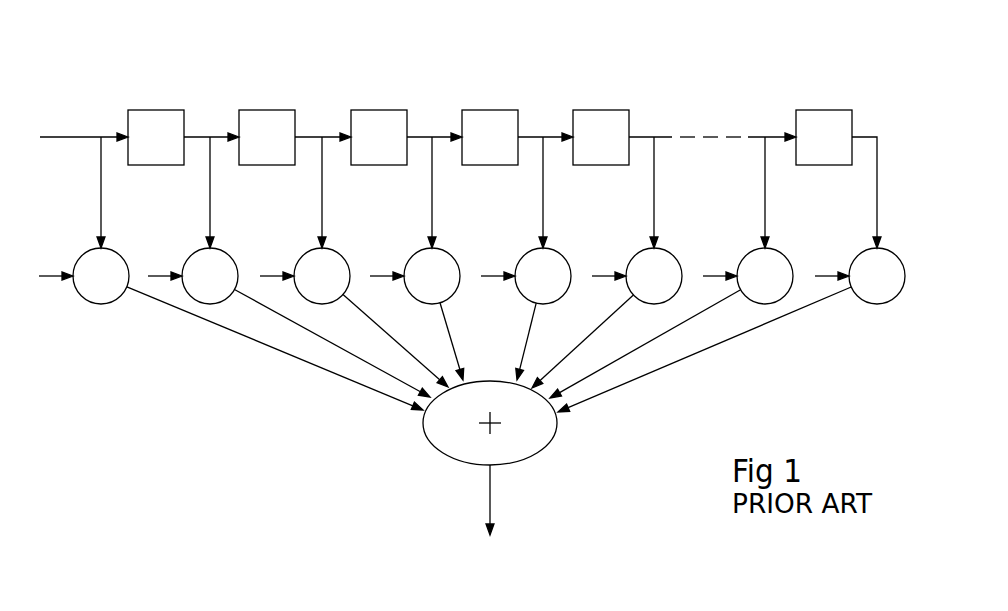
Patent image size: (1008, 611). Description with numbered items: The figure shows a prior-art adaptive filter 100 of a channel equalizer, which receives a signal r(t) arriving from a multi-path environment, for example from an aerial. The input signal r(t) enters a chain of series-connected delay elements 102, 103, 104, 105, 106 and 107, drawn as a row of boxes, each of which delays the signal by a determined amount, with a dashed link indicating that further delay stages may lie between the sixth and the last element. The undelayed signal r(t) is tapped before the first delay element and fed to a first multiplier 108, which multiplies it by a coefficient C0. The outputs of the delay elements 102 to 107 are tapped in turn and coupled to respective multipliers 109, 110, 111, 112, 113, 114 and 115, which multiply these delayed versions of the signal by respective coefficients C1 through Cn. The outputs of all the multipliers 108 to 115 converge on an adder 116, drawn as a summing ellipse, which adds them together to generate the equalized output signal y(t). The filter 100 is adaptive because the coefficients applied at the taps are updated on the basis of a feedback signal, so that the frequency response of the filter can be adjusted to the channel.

The adaptive filter 100 is at (775, 55).
The delay element 102 is at (163, 115).
The delay element 103 is at (274, 115).
The delay element 104 is at (386, 115).
The delay element 105 is at (497, 115).
The delay element 106 is at (608, 115).
The delay element 107 is at (832, 118).
The first multiplier 108 is at (93, 293).
The multiplier 109 is at (212, 298).
The multiplier 110 is at (323, 298).
The multiplier 111 is at (420, 292).
The multiplier 112 is at (528, 290).
The multiplier 113 is at (628, 287).
The multiplier 114 is at (738, 288).
The multiplier 115 is at (873, 298).
The adder 116 is at (527, 442).